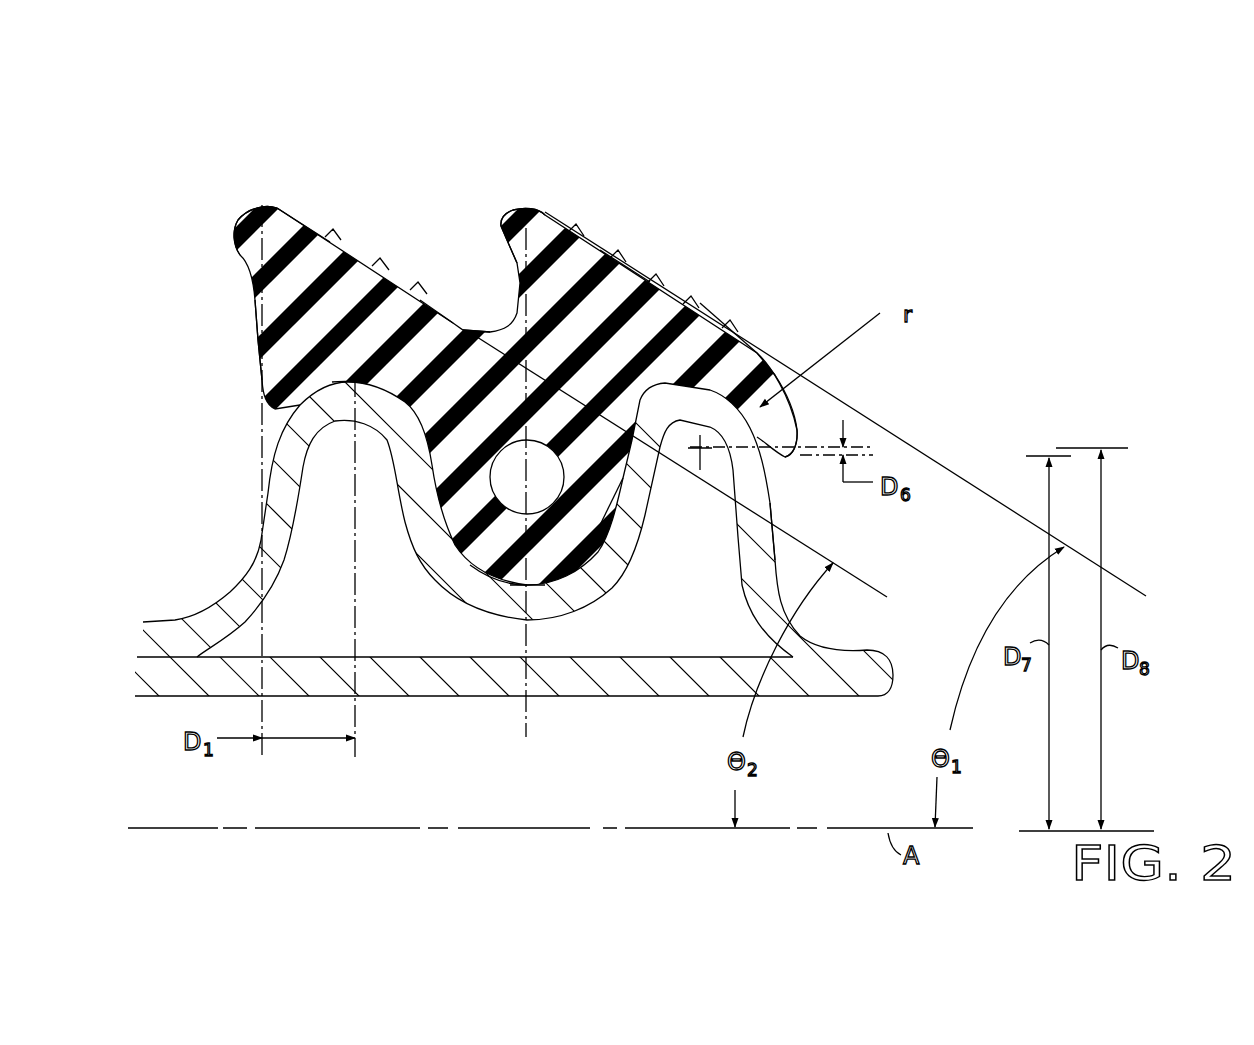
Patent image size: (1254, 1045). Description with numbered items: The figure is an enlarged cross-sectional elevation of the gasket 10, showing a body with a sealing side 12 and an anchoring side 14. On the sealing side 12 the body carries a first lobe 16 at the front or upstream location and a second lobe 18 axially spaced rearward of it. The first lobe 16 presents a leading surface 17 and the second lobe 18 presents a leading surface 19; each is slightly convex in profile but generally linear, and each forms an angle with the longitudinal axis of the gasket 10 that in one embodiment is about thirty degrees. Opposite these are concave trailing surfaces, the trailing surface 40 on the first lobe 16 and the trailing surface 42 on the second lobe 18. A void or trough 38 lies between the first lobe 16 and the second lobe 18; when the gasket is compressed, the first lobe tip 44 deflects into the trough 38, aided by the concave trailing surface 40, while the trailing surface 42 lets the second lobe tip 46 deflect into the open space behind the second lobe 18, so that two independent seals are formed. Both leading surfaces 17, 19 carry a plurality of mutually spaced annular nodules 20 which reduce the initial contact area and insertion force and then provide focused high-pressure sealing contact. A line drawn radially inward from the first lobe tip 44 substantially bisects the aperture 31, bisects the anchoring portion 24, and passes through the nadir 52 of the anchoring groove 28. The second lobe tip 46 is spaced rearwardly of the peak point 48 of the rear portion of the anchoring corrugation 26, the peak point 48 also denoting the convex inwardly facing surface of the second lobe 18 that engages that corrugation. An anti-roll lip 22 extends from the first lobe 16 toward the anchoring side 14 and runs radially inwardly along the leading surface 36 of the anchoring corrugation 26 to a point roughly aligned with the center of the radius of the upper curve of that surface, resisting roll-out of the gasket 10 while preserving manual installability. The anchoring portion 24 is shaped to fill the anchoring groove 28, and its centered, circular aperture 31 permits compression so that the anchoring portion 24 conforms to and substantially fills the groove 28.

The gasket 10 is at (734, 218).
The sealing side 12 is at (200, 200).
The anchoring side 14 is at (457, 568).
The first lobe 16 is at (503, 247).
The leading surface of first lobe 17 is at (623, 260).
The second lobe 18 is at (243, 238).
The leading surface of second lobe 19 is at (320, 227).
The nodules 20 is at (303, 220).
The anti-roll lip 22 is at (787, 427).
The anchoring portion 24 is at (556, 478).
The anchoring corrugation 26 is at (609, 628).
The anchoring groove 28 is at (508, 580).
The aperture 31 is at (610, 497).
The leading surface of anchoring corrugation 36 is at (773, 510).
The trough 38 is at (440, 255).
The trailing surface of first lobe 40 is at (503, 297).
The trailing surface of second lobe 42 is at (253, 327).
The first lobe tip 44 is at (520, 213).
The second lobe tip 46 is at (264, 207).
The peak point 48 is at (347, 387).
The nadir of anchoring groove 52 is at (530, 590).